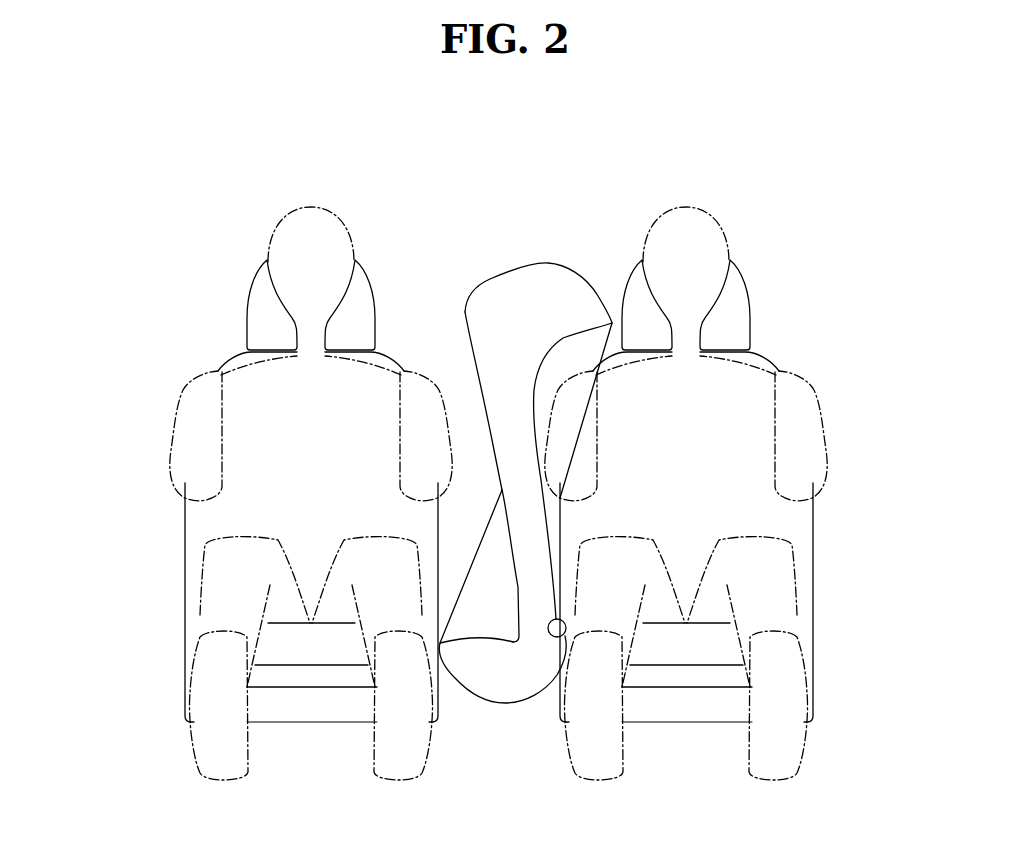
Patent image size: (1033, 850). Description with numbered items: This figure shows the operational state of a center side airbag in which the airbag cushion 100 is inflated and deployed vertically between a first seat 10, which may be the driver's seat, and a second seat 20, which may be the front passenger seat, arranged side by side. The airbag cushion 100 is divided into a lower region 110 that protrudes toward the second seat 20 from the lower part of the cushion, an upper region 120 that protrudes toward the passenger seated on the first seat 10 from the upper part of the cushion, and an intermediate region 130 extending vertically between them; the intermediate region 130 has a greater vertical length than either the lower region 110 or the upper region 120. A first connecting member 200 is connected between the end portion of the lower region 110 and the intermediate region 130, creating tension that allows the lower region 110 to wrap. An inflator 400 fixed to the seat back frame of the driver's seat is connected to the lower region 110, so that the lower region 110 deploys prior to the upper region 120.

The first seat 10 is at (818, 543).
The second seat 20 is at (178, 605).
The airbag cushion 100 is at (695, 499).
The lower region 110 is at (488, 684).
The upper region 120 is at (565, 287).
The intermediate region 130 is at (537, 579).
The first connecting member 200 is at (473, 548).
The inflator 400 is at (551, 637).